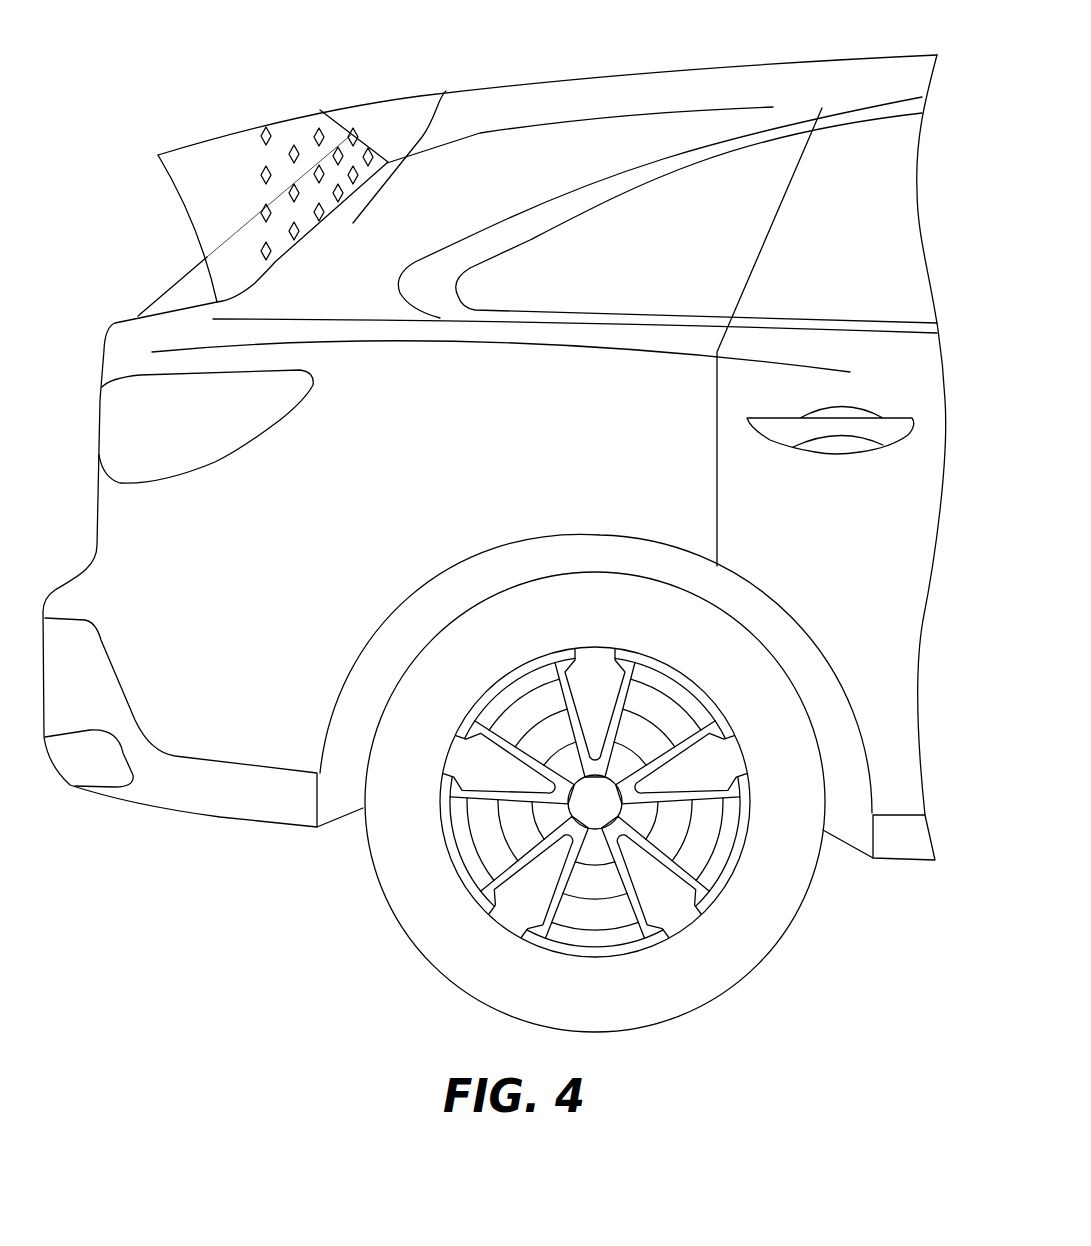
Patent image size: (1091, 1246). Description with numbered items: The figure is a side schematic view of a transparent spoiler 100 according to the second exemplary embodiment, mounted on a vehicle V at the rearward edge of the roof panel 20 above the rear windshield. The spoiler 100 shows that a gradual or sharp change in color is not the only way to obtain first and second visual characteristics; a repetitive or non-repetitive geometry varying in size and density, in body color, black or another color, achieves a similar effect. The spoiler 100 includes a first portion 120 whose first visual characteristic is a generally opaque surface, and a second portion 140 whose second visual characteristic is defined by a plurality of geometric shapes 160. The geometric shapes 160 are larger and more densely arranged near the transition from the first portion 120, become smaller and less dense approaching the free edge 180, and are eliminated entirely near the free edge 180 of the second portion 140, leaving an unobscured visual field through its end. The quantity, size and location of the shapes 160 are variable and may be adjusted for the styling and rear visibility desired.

The vehicle V is at (677, 63).
The roof panel 20 is at (512, 82).
The spoiler 100 is at (238, 167).
The first portion 120 is at (393, 122).
The second portion 140 is at (217, 170).
The geometric shapes 160 is at (313, 135).
The free edge 180 is at (180, 193).